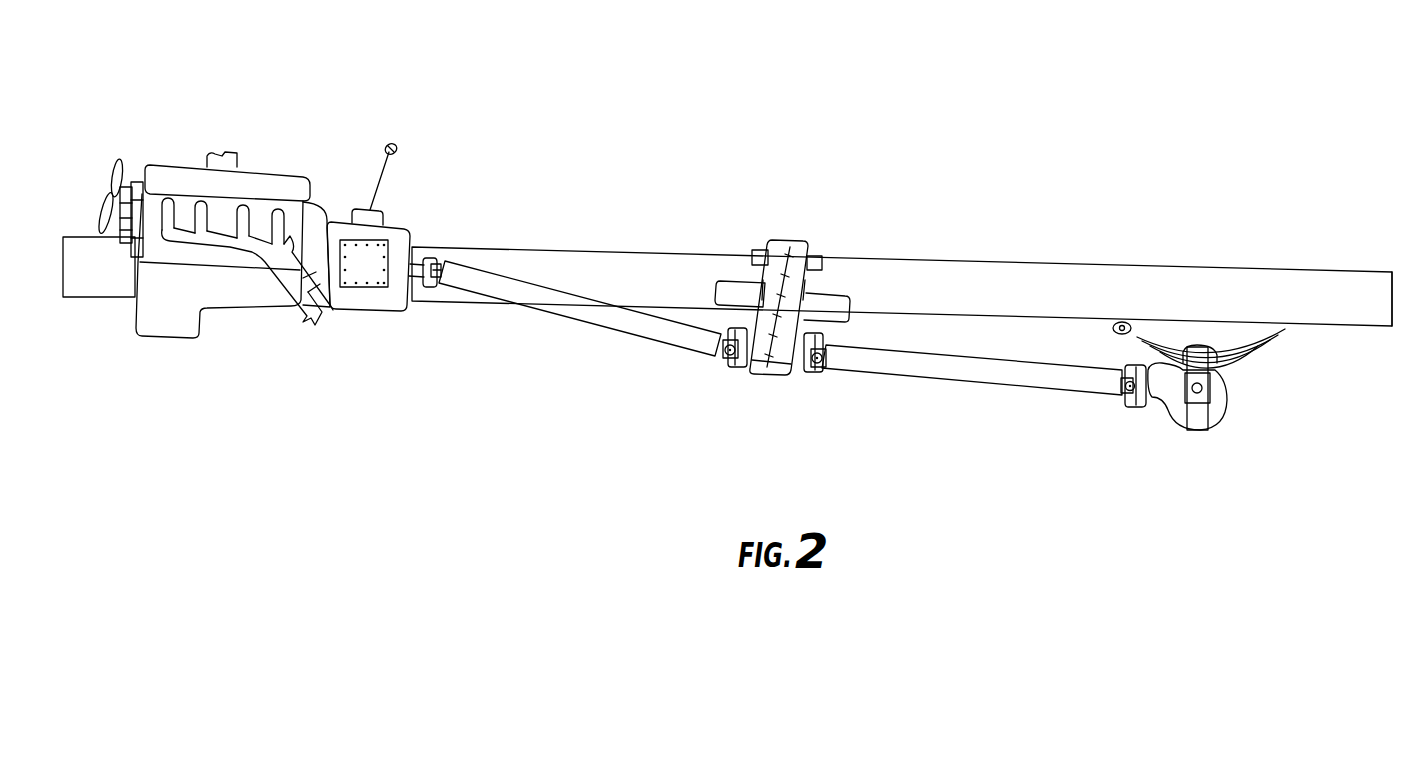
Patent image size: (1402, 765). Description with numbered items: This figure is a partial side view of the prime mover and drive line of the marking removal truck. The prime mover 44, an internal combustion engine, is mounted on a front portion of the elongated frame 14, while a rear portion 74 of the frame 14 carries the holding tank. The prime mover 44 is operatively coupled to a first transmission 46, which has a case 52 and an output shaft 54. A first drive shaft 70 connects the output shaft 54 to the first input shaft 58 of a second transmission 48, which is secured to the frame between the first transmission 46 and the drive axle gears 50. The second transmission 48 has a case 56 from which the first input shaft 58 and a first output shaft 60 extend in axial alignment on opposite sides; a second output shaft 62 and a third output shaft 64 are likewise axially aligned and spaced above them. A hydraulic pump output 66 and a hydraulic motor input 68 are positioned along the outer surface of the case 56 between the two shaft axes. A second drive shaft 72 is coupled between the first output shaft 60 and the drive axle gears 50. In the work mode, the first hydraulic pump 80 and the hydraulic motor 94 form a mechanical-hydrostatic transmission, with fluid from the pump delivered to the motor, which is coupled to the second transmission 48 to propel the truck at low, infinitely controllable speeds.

The elongated frame 14 is at (1023, 278).
The prime mover 44 is at (182, 167).
The first transmission 46 is at (397, 228).
The second transmission 48 is at (793, 250).
The drive axle gears 50 is at (1160, 407).
The case 52 is at (375, 302).
The output shaft 54 is at (432, 253).
The case 56 is at (758, 372).
The first input shaft 58 is at (733, 363).
The first output shaft 60 is at (812, 370).
The second output shaft 62 is at (820, 257).
The third output shaft 64 is at (760, 250).
The hydraulic pump output 66 is at (763, 293).
The hydraulic motor input 68 is at (808, 290).
The first drive shaft 70 is at (552, 308).
The second drive shaft 72 is at (937, 373).
The rear portion 74 is at (1310, 280).
The first hydraulic pump 80 is at (717, 293).
The hydraulic motor 94 is at (843, 303).